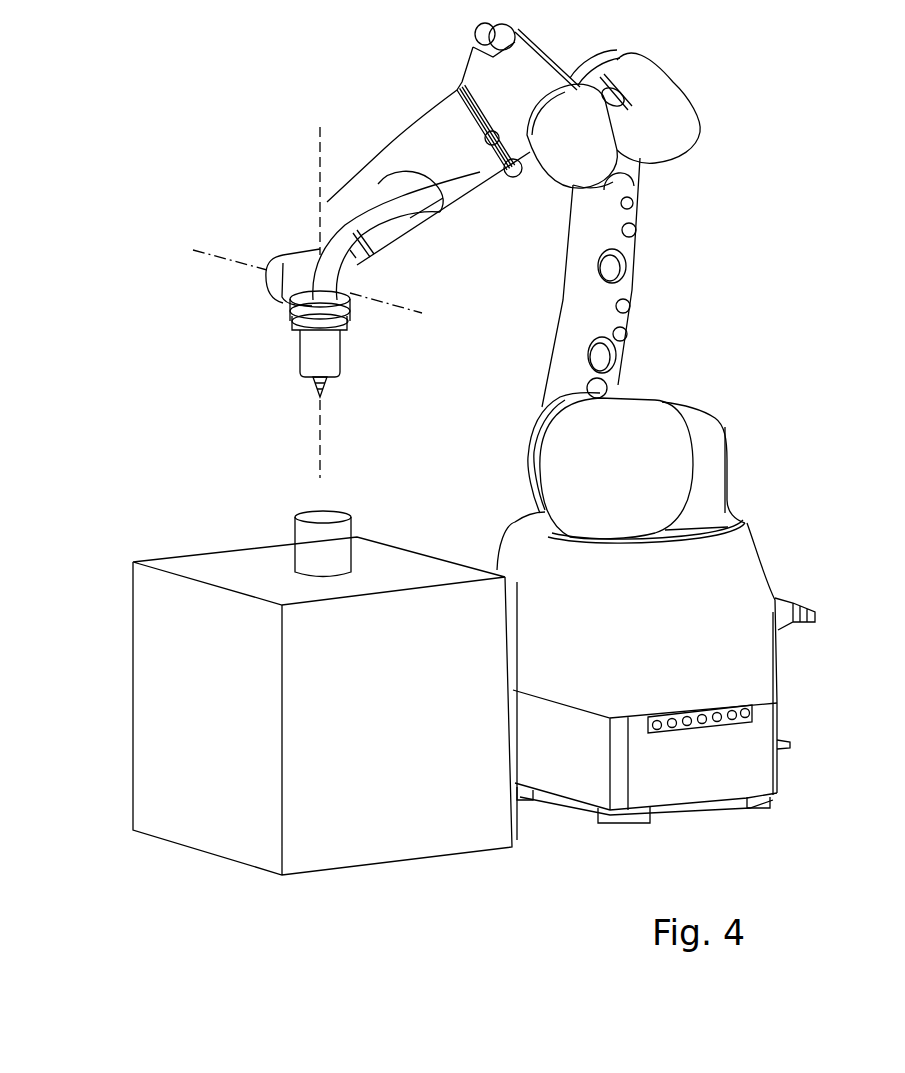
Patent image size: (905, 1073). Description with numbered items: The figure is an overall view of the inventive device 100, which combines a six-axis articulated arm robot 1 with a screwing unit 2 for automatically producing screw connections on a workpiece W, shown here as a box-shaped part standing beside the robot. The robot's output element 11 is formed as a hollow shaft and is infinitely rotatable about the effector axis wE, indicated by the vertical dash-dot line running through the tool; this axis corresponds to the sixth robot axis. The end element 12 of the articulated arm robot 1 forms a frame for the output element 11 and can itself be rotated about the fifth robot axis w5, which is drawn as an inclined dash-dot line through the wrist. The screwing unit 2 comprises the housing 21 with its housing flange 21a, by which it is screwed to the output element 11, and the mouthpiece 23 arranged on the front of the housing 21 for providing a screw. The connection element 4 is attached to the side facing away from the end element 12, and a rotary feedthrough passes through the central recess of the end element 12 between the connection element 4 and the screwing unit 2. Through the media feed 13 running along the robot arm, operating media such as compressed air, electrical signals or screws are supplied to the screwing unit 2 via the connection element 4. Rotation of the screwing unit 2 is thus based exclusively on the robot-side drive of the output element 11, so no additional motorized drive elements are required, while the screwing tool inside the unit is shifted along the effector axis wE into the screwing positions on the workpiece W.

The articulated arm robot 1 is at (646, 257).
The screwing unit 2 is at (347, 373).
The connection element 4 is at (340, 292).
The output element 11 is at (342, 305).
The end element 12 is at (290, 262).
The media feed 13 is at (370, 210).
The housing 21 is at (313, 362).
The housing flange 21a is at (303, 318).
The mouthpiece 23 is at (313, 388).
The device 100 is at (207, 200).
The workpiece W is at (317, 543).
The fifth robot axis w5 is at (383, 302).
The effector axis wE is at (317, 448).